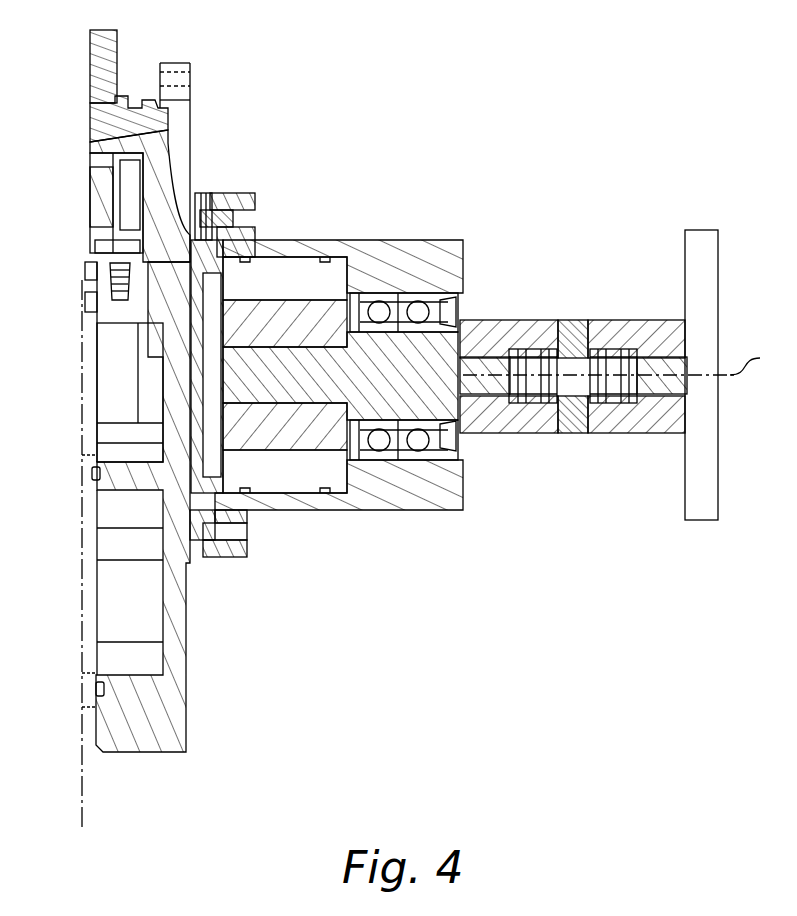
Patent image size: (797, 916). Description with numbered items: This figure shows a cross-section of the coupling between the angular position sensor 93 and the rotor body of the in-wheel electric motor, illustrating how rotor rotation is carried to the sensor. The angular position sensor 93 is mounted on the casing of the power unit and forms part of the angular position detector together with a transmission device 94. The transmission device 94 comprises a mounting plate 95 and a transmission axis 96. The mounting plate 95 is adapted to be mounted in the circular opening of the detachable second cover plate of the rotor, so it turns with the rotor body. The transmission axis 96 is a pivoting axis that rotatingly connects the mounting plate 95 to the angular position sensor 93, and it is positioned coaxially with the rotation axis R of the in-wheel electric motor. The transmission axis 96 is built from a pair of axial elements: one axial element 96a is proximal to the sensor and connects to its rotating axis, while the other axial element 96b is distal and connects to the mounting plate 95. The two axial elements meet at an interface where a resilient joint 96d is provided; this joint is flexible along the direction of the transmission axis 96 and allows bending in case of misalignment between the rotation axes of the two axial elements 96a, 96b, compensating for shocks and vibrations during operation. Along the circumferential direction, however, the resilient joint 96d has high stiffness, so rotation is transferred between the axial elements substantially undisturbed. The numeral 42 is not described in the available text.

The rotation axis 42 is at (47, 327).
The angular position sensor 93 is at (400, 482).
The transmission device 94 is at (597, 375).
The mounting plate 95 is at (700, 497).
The transmission axis 96 is at (572, 393).
The axial element 96a is at (505, 330).
The axial element 96b is at (645, 338).
The resilient joint 96d is at (575, 330).
The rotation axis R is at (752, 352).